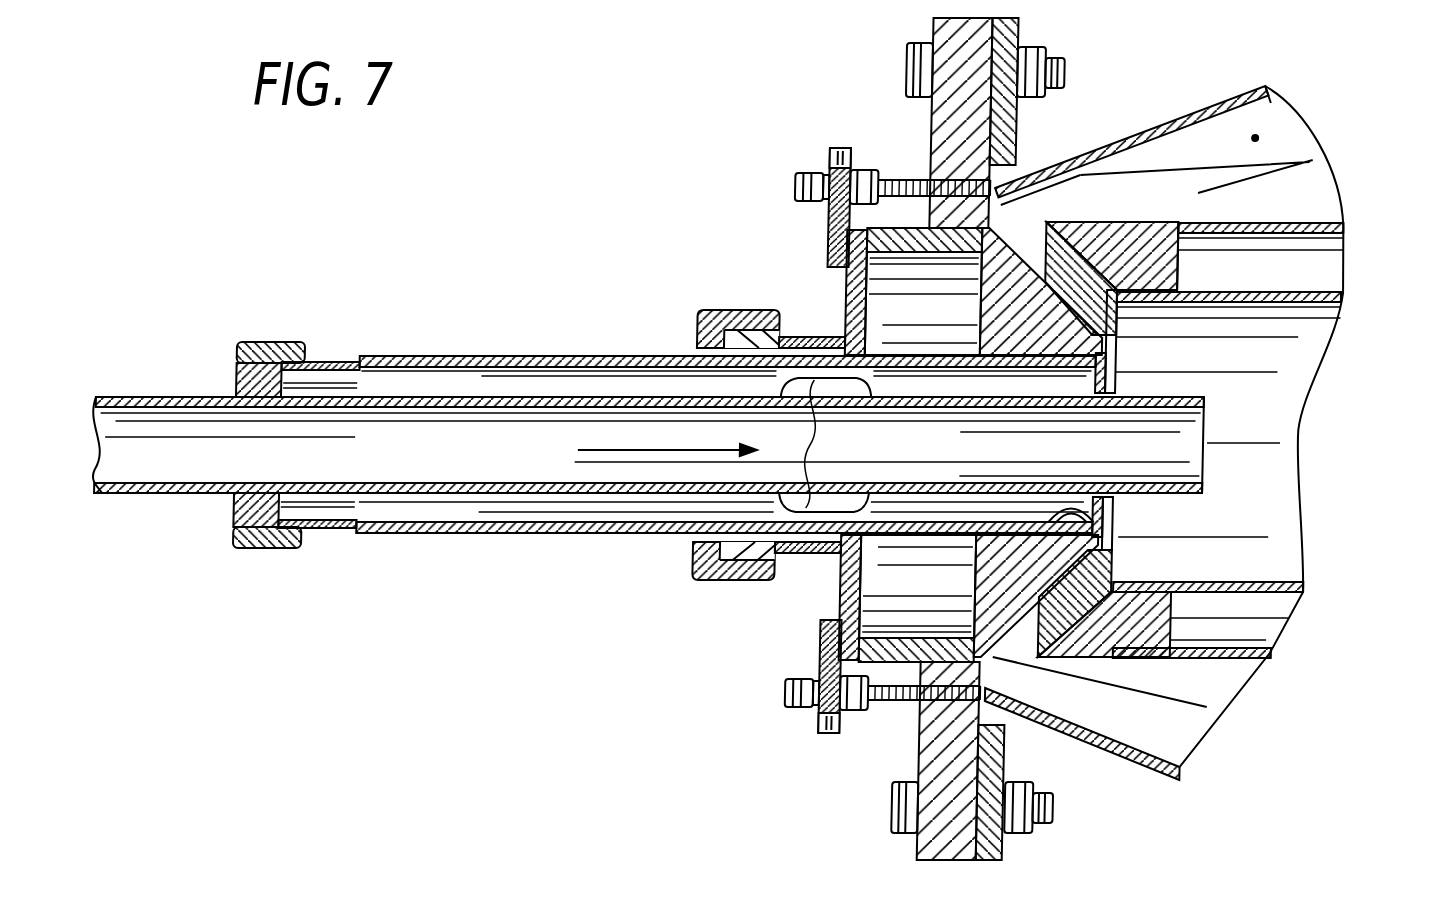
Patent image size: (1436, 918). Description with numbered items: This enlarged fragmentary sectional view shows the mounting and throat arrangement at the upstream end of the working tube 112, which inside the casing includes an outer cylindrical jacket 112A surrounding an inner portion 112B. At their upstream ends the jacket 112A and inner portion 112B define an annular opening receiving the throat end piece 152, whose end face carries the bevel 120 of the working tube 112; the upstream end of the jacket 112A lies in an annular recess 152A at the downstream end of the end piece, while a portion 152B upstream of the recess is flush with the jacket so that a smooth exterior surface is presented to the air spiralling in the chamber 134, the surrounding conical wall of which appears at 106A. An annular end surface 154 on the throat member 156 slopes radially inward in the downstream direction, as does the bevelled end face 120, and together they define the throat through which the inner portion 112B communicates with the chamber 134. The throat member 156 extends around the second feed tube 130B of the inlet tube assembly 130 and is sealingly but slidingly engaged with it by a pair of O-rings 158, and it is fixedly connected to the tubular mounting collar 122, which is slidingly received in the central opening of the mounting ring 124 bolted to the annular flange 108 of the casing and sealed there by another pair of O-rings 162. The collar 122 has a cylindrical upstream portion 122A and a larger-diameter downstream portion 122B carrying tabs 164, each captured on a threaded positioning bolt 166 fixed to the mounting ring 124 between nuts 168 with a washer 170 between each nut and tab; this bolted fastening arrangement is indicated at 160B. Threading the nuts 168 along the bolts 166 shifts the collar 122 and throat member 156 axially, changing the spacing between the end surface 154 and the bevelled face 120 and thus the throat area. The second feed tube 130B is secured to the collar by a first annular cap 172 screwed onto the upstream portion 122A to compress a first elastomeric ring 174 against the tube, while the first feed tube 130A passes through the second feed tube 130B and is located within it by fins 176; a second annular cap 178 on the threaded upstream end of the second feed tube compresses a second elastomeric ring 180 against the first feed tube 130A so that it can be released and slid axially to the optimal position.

The conical transition section 106A is at (1066, 135).
The annular flange 108 is at (1018, 865).
The working tube 112 is at (1209, 660).
The outer cylindrical jacket 112A is at (1286, 223).
The inner portion 112B is at (1290, 293).
The bevel 120 is at (1033, 247).
The mounting collar 122 is at (822, 445).
The upstream portion 122A is at (824, 340).
The downstream portion 122B is at (842, 303).
The mounting ring 124 is at (926, 862).
The inlet tube assembly 130 is at (425, 357).
The first feed tube 130A is at (398, 360).
The second feed tube 130B is at (451, 357).
The chamber 134 is at (1249, 138).
The throat end piece 152 is at (1095, 214).
The annular recess 152A is at (1173, 240).
The portion of the end piece 152B is at (1062, 220).
The annular end surface 154 is at (1073, 573).
The throat member 156 is at (1098, 332).
The O-rings 158 is at (1076, 510).
The fastener assembly 160B is at (788, 693).
The O-rings 162 is at (912, 707).
The tab 164 is at (823, 247).
The positioning bolt 166 is at (891, 167).
The nut 168 is at (852, 170).
The washer 170 is at (826, 150).
The first annular cap 172 is at (697, 310).
The first elastomeric ring 174 is at (691, 350).
The fins 176 is at (825, 445).
The second annular cap 178 is at (250, 340).
The second elastomeric ring 180 is at (236, 382).